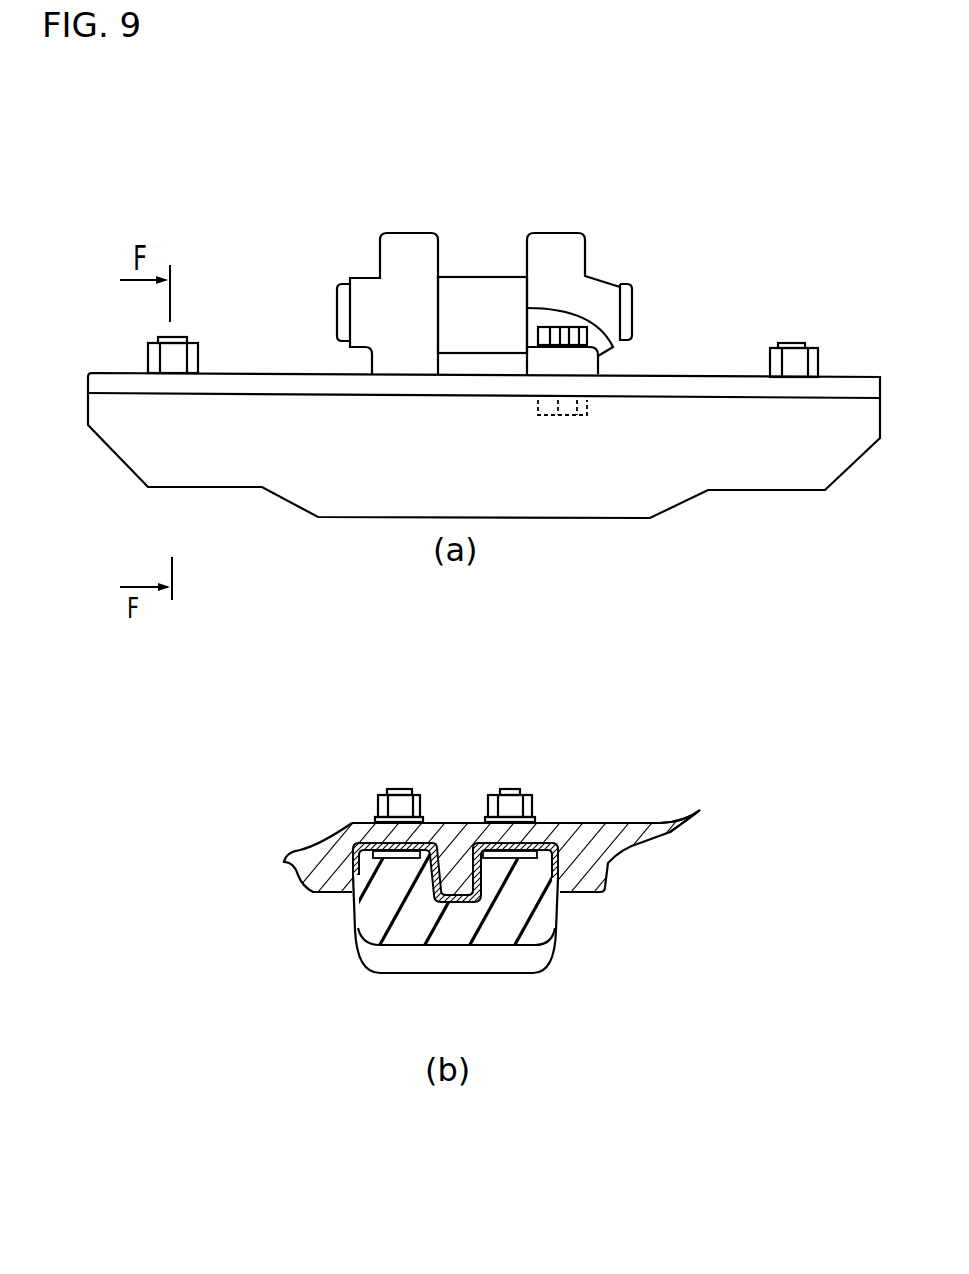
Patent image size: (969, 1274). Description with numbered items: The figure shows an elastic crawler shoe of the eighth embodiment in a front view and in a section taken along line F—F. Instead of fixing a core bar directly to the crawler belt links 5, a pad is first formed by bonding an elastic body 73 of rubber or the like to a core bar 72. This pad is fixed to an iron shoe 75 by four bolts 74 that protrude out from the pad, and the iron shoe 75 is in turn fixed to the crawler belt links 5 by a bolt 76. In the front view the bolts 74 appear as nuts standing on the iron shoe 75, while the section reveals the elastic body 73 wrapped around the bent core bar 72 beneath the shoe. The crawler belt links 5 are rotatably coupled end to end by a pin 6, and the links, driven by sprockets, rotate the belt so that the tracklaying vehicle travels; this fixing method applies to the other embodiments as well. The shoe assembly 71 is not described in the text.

The crawler belt links 5 is at (368, 278).
The pin 6 is at (485, 277).
The base plate 71 is at (683, 286).
The core bar 72 is at (481, 897).
The elastic body 73 is at (377, 917).
The bolts 74 is at (197, 347).
The iron shoe 75 is at (697, 382).
The bolt 76 is at (567, 327).